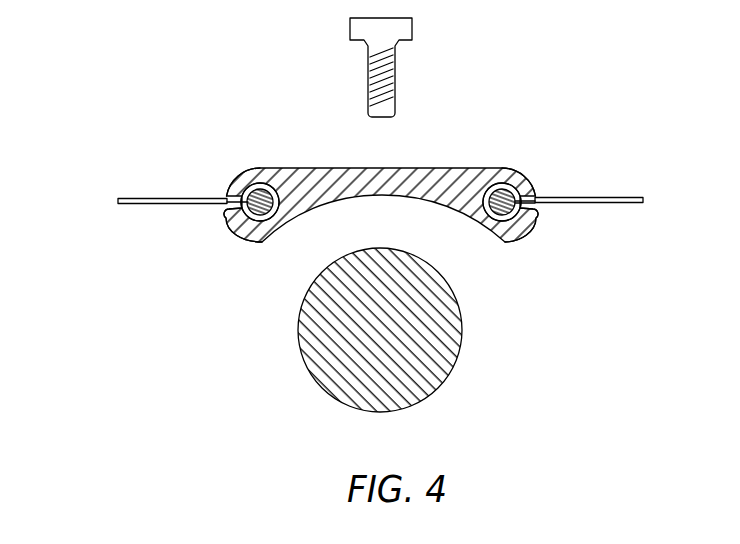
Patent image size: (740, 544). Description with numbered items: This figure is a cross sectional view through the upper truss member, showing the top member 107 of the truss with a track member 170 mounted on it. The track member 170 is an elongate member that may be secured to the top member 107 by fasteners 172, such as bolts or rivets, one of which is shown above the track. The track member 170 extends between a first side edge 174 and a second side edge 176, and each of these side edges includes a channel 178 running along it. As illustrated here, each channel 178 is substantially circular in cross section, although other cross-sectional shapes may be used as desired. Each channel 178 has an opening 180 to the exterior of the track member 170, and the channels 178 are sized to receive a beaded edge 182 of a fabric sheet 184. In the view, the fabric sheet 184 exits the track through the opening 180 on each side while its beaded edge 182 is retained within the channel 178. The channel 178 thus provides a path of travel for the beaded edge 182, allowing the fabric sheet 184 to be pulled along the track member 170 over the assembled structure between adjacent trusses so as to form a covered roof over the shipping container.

The top member 107 is at (462, 348).
The track member 170 is at (436, 168).
The fasteners 172 is at (396, 60).
The first side edge 174 is at (550, 190).
The second side edge 176 is at (223, 177).
The channel 178 is at (237, 222).
The opening 180 is at (543, 217).
The beaded edge 182 is at (285, 166).
The fabric sheet 184 is at (155, 198).